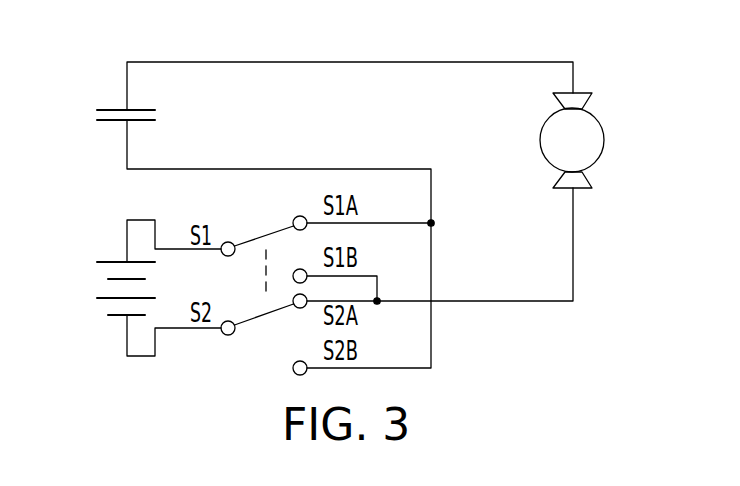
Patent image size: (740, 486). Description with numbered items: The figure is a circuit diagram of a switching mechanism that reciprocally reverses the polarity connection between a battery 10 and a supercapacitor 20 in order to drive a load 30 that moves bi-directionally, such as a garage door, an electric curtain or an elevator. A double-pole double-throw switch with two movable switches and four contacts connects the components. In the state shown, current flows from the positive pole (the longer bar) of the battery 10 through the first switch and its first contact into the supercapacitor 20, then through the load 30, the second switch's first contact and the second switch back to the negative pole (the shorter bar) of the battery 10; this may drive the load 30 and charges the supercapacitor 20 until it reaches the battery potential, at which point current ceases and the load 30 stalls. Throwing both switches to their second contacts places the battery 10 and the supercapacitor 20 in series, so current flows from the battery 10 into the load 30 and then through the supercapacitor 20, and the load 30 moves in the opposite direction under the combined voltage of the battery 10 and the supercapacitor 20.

The battery 10 is at (91, 271).
The supercapacitor 20 is at (106, 95).
The load 30 is at (588, 143).